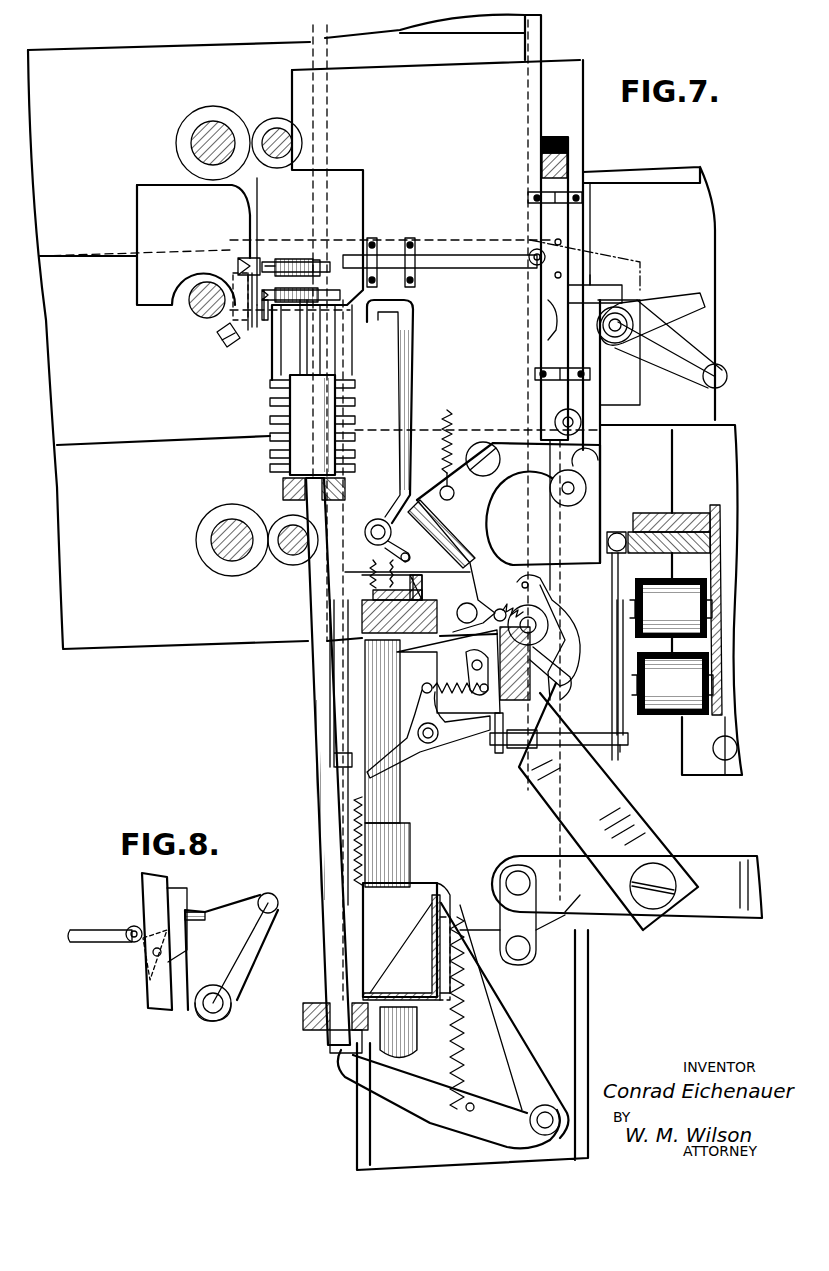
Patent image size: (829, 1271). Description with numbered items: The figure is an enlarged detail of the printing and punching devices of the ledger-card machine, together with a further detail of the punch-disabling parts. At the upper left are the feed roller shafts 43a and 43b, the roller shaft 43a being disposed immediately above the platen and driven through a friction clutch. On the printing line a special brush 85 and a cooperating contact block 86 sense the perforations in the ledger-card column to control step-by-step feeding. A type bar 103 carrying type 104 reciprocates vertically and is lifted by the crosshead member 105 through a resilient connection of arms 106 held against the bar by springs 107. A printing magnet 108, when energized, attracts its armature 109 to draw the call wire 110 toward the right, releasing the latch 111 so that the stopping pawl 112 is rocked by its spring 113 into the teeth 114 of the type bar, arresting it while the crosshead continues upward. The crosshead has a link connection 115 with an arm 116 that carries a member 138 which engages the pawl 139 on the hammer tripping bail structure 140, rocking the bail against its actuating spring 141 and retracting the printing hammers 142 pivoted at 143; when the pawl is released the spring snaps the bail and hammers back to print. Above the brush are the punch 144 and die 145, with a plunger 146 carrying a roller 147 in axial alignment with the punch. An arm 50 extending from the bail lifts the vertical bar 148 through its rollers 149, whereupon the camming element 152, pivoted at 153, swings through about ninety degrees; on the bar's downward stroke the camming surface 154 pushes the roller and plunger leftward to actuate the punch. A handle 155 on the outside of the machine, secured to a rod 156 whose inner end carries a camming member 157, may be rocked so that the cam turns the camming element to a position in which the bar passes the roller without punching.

In FIG. 7, the roller shaft 43a is at (218, 135).
In FIG. 7, the lower guide rollers 43b is at (228, 525).
In FIG. 7, the arm 50 is at (592, 457).
In FIG. 7, the special brush 85 is at (266, 322).
In FIG. 7, the contact block 86 is at (257, 322).
In FIG. 7, the type bar 103 is at (318, 660).
In FIG. 7, the type 104 is at (272, 434).
In FIG. 7, the crosshead member 105 is at (406, 941).
In FIG. 7, the arm 106 is at (418, 1102).
In FIG. 7, the spring 107 is at (470, 1095).
In FIG. 7, the printing magnet 108 is at (675, 610).
In FIG. 7, the armature 109 is at (612, 604).
In FIG. 7, the call wire 110 is at (600, 733).
In FIG. 7, the latch 111 is at (500, 718).
In FIG. 7, the stopping pawl 112 is at (422, 748).
In FIG. 7, the spring 113 is at (440, 684).
In FIG. 7, the teeth 114 is at (367, 808).
In FIG. 7, the link connection 115 is at (535, 942).
In FIG. 7, the arm 116 is at (605, 903).
In FIG. 7, the member 138 is at (608, 806).
In FIG. 7, the pawl 139 is at (573, 646).
In FIG. 7, the hammer tripping bail structure 140 is at (478, 560).
In FIG. 7, the actuating spring 141 is at (453, 422).
In FIG. 7, the printing hammer 142 is at (411, 366).
In FIG. 7, the pivot 143 is at (375, 520).
In FIG. 7, the punch 144 is at (268, 262).
In FIG. 7, the die 145 is at (240, 262).
In FIG. 7, the plunger 146 is at (440, 262).
In FIG. 8, the plunger 146 is at (103, 930).
In FIG. 7, the roller 147 is at (530, 252).
In FIG. 8, the roller 147 is at (133, 946).
In FIG. 7, the vertical bar 148 is at (562, 343).
In FIG. 8, the vertical bar 148 is at (158, 1000).
In FIG. 7, the roller 149 is at (555, 475).
In FIG. 7, the camming element 152 is at (618, 297).
In FIG. 8, the camming element 152 is at (178, 892).
In FIG. 7, the pivot 153 is at (553, 278).
In FIG. 8, the pivot 153 is at (153, 956).
In FIG. 7, the camming surface 154 is at (555, 246).
In FIG. 7, the handle 155 is at (724, 370).
In FIG. 8, the handle 155 is at (272, 896).
In FIG. 7, the rod 156 is at (622, 318).
In FIG. 8, the rod 156 is at (218, 1008).
In FIG. 7, the camming member 157 is at (703, 300).
In FIG. 8, the camming member 157 is at (208, 918).